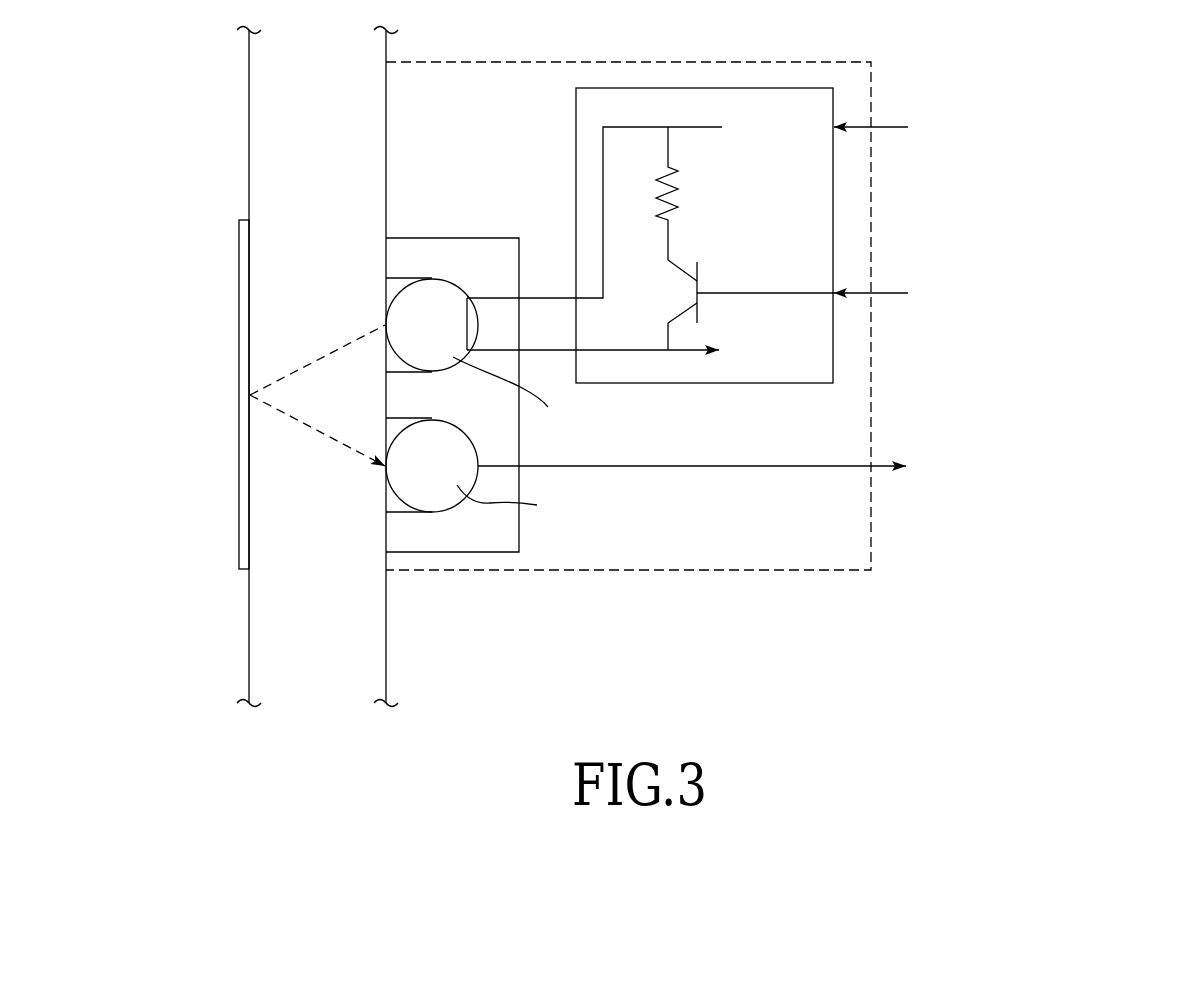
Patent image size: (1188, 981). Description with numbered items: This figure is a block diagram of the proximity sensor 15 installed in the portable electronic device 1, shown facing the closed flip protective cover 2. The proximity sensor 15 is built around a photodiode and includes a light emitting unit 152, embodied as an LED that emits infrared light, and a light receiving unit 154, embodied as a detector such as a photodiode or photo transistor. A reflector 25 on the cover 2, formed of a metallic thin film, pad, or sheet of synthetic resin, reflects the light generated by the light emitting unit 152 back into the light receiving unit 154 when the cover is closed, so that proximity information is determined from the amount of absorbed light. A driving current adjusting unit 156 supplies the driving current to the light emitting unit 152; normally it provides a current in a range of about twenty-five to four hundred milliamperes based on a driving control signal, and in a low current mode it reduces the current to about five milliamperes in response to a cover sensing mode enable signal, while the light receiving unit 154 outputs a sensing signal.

The portable electronic device 1 is at (455, 657).
The flip protective cover 2 is at (175, 657).
The proximity sensor 15 is at (620, 62).
The reflector 25 is at (239, 396).
The light emitting unit 152 is at (447, 279).
The light receiving unit 154 is at (447, 420).
The driving current adjusting unit 156 is at (576, 135).